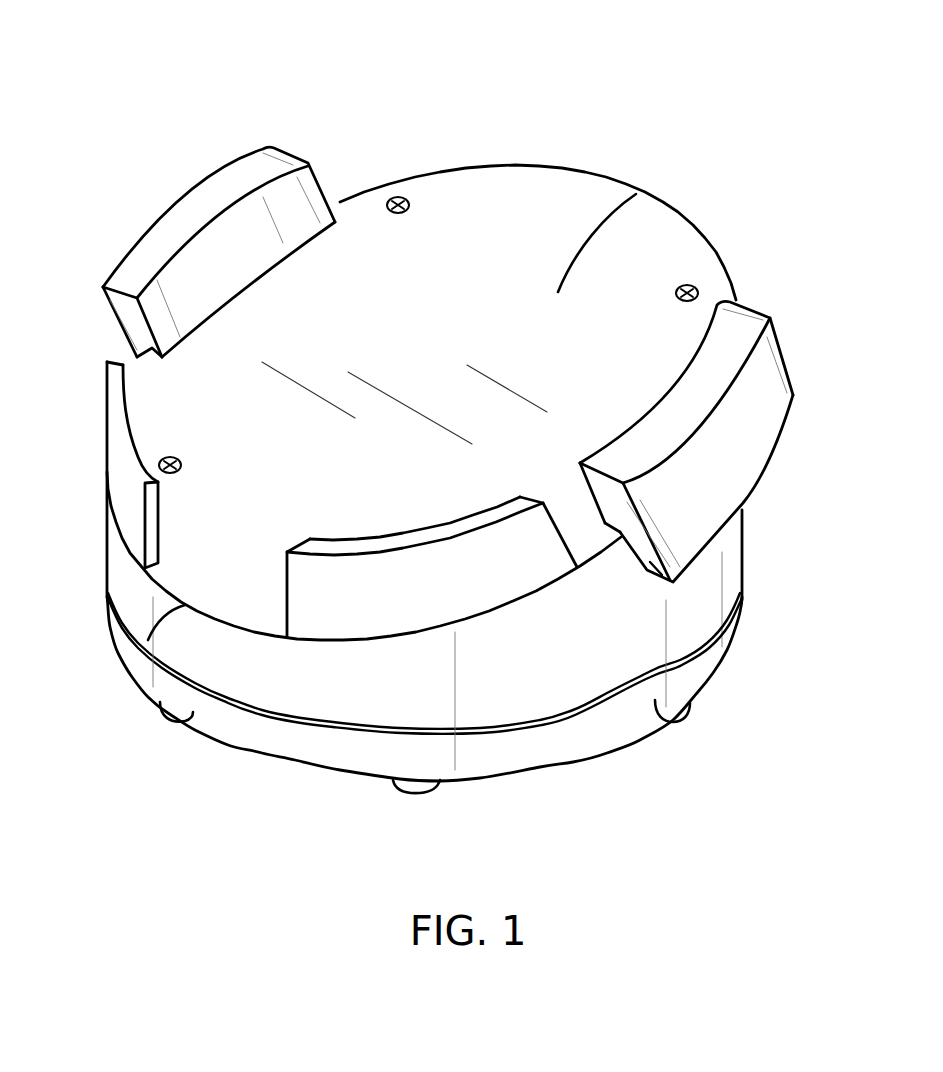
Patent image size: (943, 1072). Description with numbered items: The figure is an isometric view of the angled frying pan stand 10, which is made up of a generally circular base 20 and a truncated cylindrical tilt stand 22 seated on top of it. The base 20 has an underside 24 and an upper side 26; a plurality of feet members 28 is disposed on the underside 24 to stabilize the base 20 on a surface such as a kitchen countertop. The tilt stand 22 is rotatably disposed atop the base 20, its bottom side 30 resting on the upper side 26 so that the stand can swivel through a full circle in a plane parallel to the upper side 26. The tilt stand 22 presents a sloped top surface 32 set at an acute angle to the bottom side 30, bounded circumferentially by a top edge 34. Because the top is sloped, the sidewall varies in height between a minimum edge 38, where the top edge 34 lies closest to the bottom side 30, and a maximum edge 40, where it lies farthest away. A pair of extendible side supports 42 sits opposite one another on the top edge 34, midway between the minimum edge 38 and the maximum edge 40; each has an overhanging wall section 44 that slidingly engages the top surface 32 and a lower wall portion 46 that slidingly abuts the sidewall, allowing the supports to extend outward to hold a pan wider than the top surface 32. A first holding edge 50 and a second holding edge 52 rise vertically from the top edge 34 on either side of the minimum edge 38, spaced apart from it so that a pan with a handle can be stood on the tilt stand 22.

The angled frying pan stand 10 is at (690, 90).
The base 20 is at (728, 630).
The tilt stand 22 is at (440, 172).
The underside 24 is at (583, 764).
The upper side 26 is at (660, 677).
The feet members 28 is at (178, 721).
The bottom side 30 is at (680, 657).
The top surface 32 is at (636, 194).
The top edge 34 is at (511, 167).
The minimum edge 38 is at (150, 685).
The maximum edge 40 is at (548, 170).
The extendible side supports 42 is at (283, 152).
The overhanging wall section 44 is at (137, 356).
The lower wall portion 46 is at (650, 562).
The first holding edge 50 is at (120, 497).
The second holding edge 52 is at (293, 597).